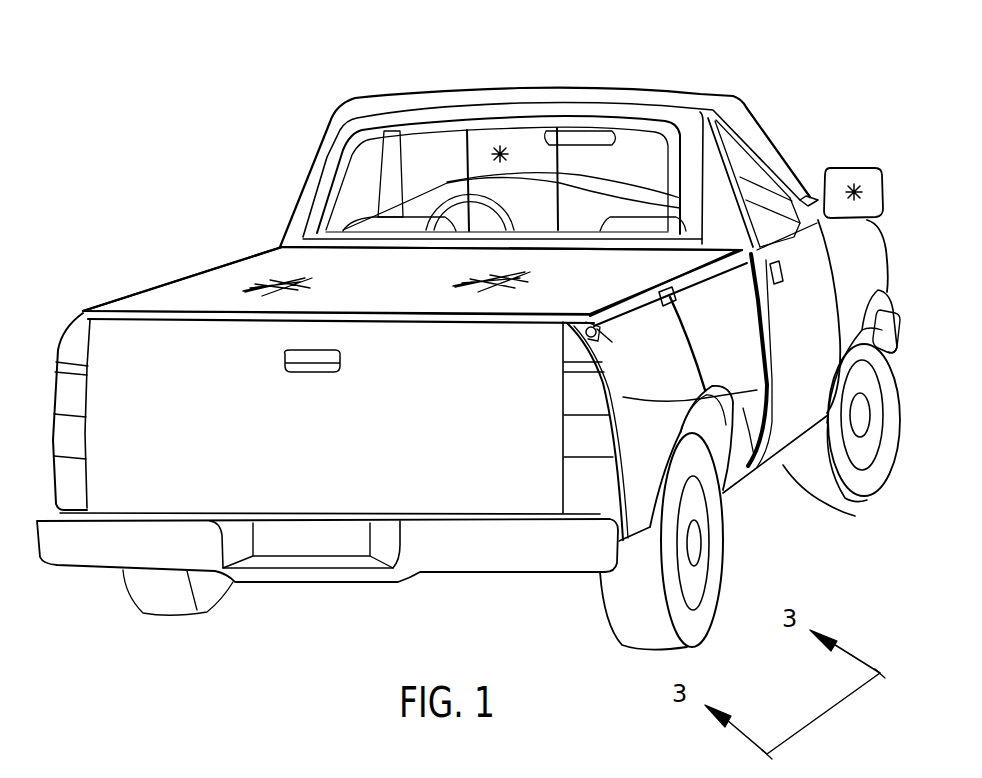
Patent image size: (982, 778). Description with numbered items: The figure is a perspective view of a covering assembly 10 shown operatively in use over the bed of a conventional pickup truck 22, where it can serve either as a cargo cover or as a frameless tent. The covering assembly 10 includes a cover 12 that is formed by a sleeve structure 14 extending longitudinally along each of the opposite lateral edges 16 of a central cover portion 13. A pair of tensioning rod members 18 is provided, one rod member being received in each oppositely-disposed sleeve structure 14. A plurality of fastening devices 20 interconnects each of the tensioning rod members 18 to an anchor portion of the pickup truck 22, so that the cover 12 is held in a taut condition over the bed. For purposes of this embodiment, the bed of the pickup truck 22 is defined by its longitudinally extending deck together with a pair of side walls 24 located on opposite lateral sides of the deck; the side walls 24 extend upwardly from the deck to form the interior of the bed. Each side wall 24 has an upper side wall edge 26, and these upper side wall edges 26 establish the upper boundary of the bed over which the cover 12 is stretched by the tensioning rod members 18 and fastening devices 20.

The covering assembly 10 is at (228, 243).
The cover 12 is at (409, 294).
The central cover portion 13 is at (182, 298).
The sleeve structure 14 is at (687, 283).
The lateral edges 16 is at (603, 305).
The tensioning rod members 18 is at (660, 289).
The fastening devices 20 is at (773, 385).
The pickup truck 22 is at (491, 82).
The side walls 24 is at (817, 500).
The upper side wall edge 26 is at (613, 343).